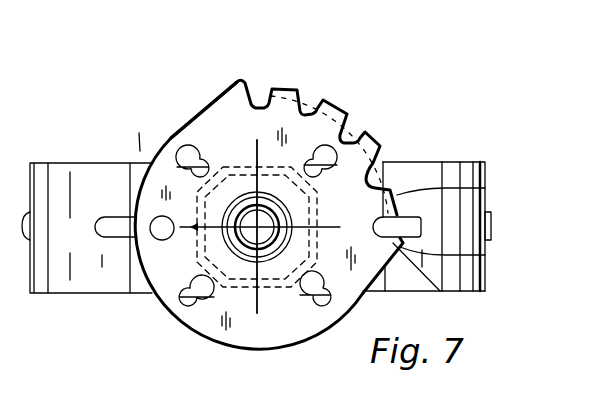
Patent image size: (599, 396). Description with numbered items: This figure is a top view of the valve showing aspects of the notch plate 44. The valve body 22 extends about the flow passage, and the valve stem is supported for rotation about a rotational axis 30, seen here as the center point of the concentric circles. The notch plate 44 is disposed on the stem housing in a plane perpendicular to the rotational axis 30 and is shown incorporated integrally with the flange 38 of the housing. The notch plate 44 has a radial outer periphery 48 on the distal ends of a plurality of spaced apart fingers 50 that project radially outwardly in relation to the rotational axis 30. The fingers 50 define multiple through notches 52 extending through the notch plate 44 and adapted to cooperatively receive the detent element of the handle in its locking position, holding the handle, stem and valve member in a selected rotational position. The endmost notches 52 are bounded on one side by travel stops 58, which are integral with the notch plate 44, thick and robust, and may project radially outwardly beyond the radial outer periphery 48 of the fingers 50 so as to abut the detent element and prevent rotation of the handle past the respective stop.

The body 22 is at (457, 163).
The rotational axis 30 is at (257, 227).
The flange 38 is at (336, 176).
The notch plate 44 is at (167, 147).
The radial outer periphery 48 is at (340, 112).
The fingers 50 is at (281, 85).
The notches 52 is at (257, 90).
The travel stops 58 is at (221, 97).